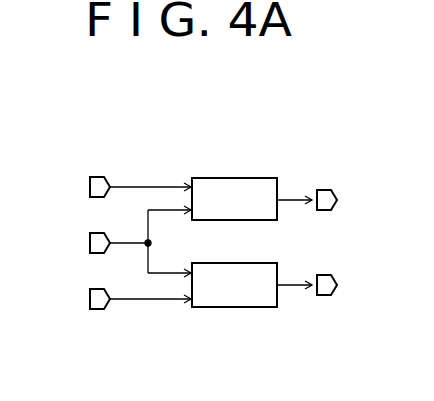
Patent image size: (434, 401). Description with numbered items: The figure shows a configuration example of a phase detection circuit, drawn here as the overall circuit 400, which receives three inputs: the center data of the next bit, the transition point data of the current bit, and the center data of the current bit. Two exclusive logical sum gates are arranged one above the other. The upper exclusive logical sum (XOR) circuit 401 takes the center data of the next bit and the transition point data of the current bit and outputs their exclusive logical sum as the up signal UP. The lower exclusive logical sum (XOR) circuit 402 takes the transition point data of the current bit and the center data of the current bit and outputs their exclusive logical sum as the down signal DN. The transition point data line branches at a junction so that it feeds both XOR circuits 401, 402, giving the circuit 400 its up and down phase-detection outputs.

The phase detector circuit 400 is at (185, 241).
The exclusive logical sum (XOR) circuit 401 is at (241, 178).
The exclusive logical sum (XOR) circuit 402 is at (240, 307).